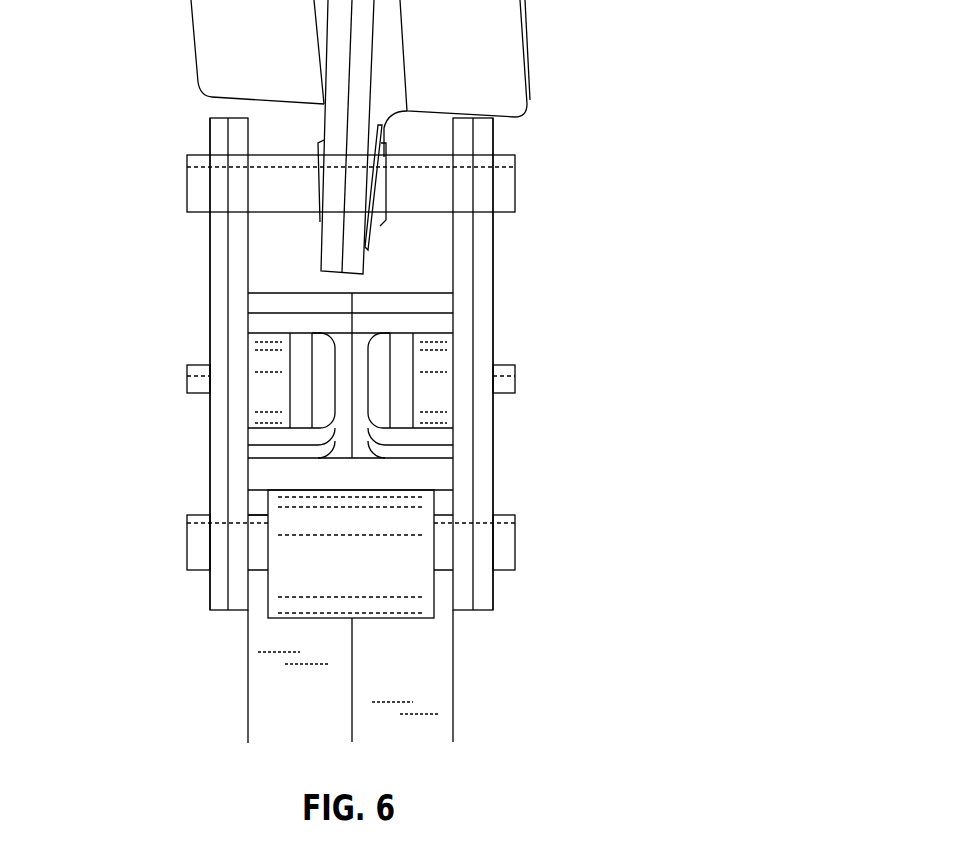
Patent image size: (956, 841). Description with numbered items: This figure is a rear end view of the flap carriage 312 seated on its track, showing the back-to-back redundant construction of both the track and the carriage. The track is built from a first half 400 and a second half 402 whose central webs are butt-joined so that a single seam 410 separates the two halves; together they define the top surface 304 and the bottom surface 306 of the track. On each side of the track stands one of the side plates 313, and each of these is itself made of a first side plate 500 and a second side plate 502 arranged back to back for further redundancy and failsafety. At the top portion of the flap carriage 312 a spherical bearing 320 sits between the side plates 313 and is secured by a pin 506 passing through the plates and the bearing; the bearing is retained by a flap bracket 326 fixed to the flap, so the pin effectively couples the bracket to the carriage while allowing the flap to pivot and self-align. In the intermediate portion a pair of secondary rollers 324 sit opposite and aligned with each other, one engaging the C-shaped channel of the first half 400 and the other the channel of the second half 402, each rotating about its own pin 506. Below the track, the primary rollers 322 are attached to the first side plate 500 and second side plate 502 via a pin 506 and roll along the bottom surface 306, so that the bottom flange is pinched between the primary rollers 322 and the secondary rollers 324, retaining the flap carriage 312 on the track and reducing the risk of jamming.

The top surface 304 is at (293, 292).
The bottom surface 306 is at (403, 490).
The flap carriage 312 is at (560, 150).
The side plates 313 is at (200, 119).
The spherical bearing 320 is at (376, 176).
The primary rollers 322 is at (371, 579).
The secondary rollers 324 is at (263, 363).
The flap bracket 326 is at (485, 35).
The first half 400 is at (268, 320).
The second half 402 is at (420, 302).
The seam 410 is at (352, 458).
The first side plate 500 is at (242, 488).
The second side plate 502 is at (217, 450).
The pin 506 is at (500, 197).